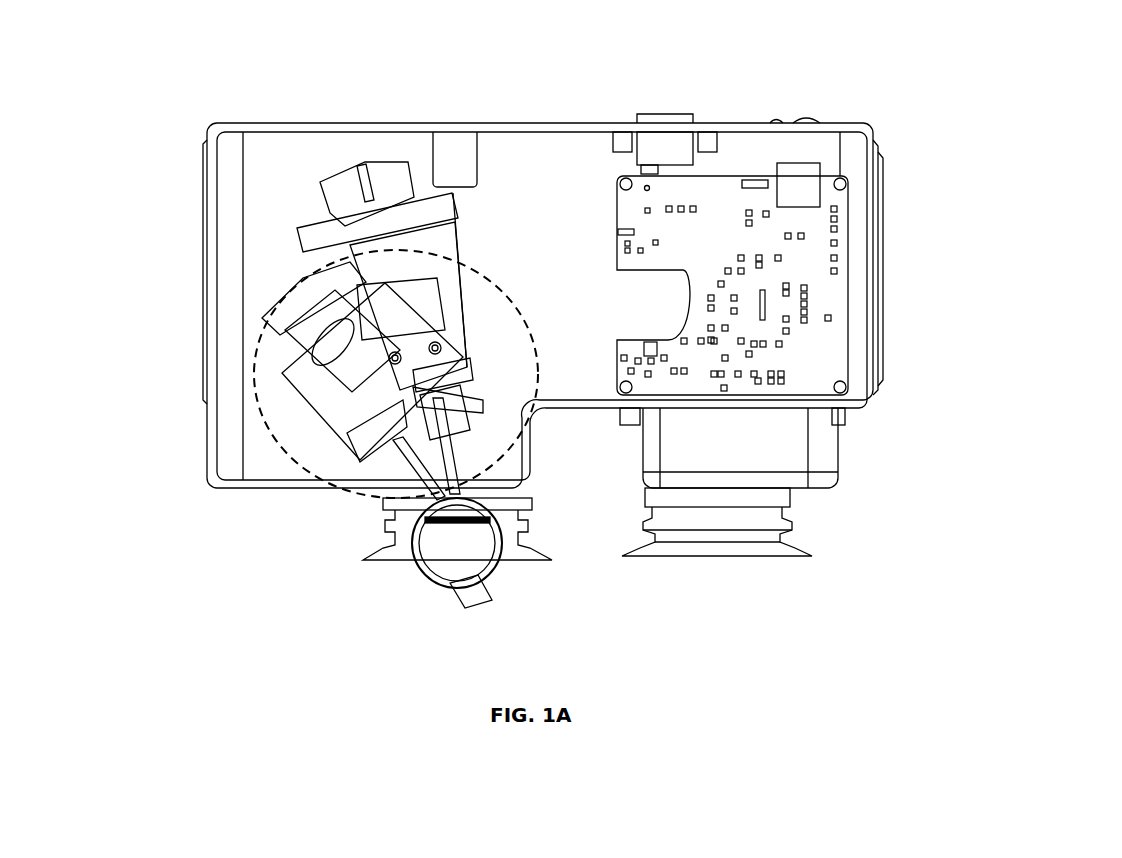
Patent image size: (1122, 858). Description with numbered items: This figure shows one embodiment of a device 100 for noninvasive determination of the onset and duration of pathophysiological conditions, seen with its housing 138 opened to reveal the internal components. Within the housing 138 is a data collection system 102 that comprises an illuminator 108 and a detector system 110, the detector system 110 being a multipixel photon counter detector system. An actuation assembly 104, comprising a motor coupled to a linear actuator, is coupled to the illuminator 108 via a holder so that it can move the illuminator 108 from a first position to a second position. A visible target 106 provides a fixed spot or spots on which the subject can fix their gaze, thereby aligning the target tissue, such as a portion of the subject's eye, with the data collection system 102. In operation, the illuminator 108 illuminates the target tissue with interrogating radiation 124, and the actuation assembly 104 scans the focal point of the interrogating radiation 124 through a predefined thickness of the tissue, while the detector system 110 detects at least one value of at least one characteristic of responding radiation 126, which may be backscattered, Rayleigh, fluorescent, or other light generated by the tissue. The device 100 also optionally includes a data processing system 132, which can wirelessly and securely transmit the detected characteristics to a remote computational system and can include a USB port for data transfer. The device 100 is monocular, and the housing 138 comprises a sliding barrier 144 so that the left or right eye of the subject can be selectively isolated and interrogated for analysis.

The device 100 is at (143, 120).
The data collection system 102 is at (323, 263).
The actuation assembly 104 is at (367, 150).
The visible target 106 is at (453, 147).
The illuminator 108 is at (417, 343).
The detector system 110 is at (305, 370).
The interrogating radiation 124 is at (457, 453).
The responding radiation 126 is at (398, 467).
The data processing system 132 is at (852, 222).
The housing 138 is at (207, 437).
The sliding barrier 144 is at (813, 452).